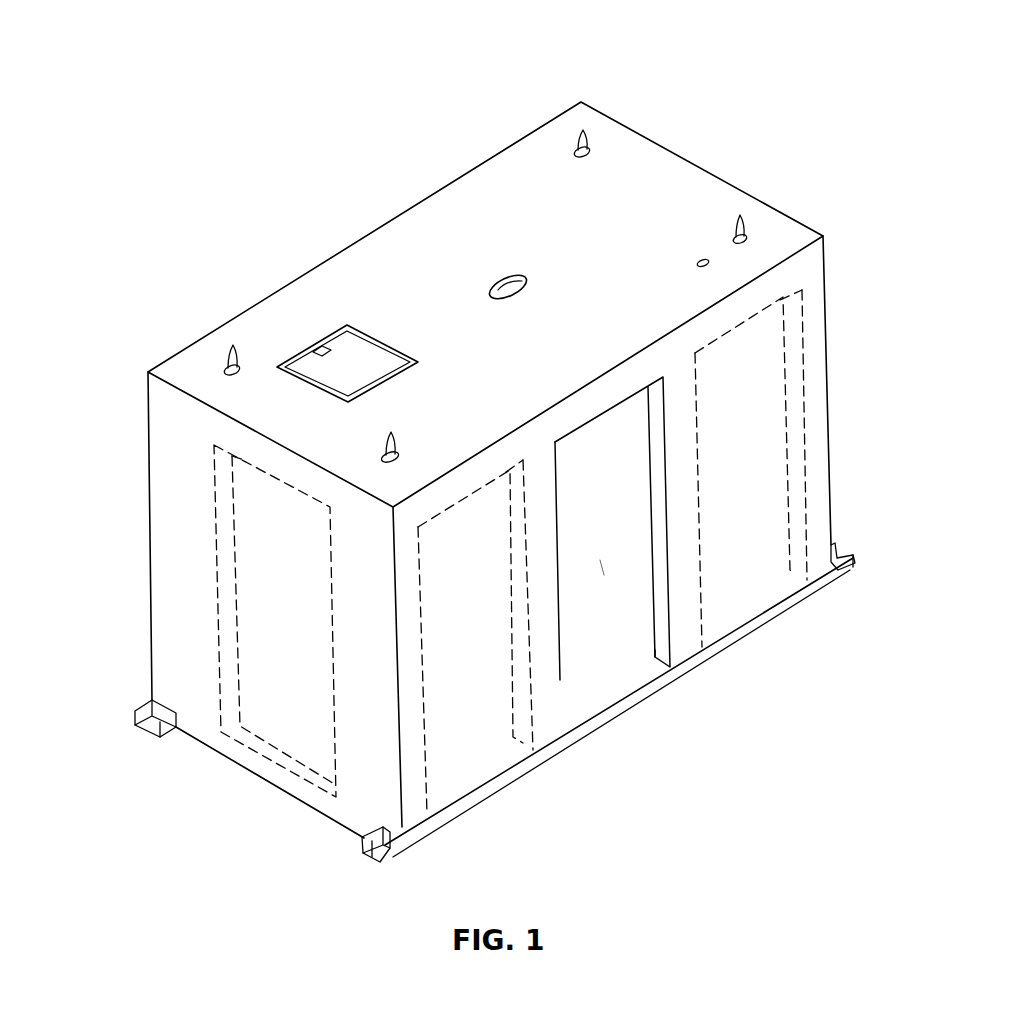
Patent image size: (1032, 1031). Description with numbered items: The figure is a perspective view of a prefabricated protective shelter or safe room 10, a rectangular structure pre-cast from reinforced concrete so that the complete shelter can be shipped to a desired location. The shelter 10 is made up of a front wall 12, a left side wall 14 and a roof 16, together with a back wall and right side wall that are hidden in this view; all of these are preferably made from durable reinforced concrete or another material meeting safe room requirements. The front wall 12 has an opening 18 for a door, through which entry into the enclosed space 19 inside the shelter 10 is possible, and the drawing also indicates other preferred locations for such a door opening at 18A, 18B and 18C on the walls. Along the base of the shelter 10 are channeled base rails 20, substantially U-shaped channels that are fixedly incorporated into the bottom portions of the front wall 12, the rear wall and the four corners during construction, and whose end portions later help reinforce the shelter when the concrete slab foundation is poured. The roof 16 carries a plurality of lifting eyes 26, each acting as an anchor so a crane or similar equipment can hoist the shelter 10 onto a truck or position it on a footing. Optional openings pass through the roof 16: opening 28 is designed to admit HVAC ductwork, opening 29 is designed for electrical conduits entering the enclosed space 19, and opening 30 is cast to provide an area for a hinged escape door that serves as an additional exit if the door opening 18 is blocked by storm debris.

The prefabricated protective shelter 10 is at (699, 74).
The front wall 12 is at (807, 277).
The left side wall 14 is at (170, 440).
The roof 16 is at (662, 187).
The opening 18 is at (667, 630).
The opening 18A is at (797, 557).
The opening 18B is at (523, 717).
The opening 18C is at (229, 707).
The enclosed space 19 is at (602, 567).
The channeled base rail 20 is at (385, 847).
The lifting eye 26 is at (583, 132).
The opening 28 is at (508, 283).
The opening 29 is at (700, 266).
The opening 30 is at (342, 342).